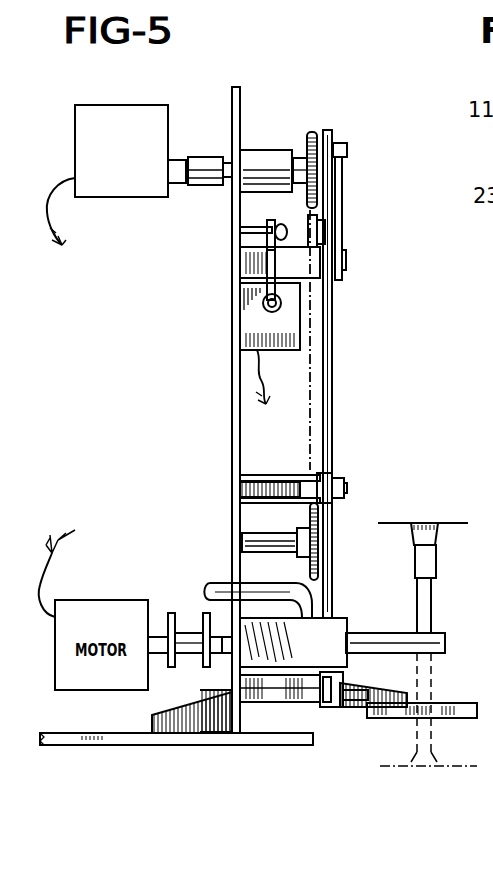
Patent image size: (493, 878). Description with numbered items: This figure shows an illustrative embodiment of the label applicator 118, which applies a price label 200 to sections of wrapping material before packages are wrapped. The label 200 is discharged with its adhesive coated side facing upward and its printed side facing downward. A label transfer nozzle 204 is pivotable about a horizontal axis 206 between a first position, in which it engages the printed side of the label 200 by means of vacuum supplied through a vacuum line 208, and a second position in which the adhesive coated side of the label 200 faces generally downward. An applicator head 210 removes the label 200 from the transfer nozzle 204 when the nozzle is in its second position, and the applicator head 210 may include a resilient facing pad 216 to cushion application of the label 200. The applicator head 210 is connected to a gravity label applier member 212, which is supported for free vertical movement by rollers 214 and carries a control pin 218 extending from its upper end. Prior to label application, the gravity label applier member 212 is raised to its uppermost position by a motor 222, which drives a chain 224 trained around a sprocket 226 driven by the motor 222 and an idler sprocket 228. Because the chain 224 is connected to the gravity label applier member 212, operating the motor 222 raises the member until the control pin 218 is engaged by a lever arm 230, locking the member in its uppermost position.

The label applicator 118 is at (310, 50).
The price label 200 is at (393, 522).
The label transfer nozzle 204 is at (418, 597).
The horizontal axis 206 is at (450, 639).
The vacuum line 208 is at (227, 583).
The applicator head 210 is at (360, 705).
The gravity label applier member 212 is at (333, 320).
The rollers 214 is at (342, 477).
The resilient facing pad 216 is at (477, 710).
The control pin 218 is at (337, 141).
The motor 222 is at (115, 105).
The chain 224 is at (308, 380).
The sprocket 226 is at (308, 130).
The idler sprocket 228 is at (303, 528).
The lever arm 230 is at (346, 196).